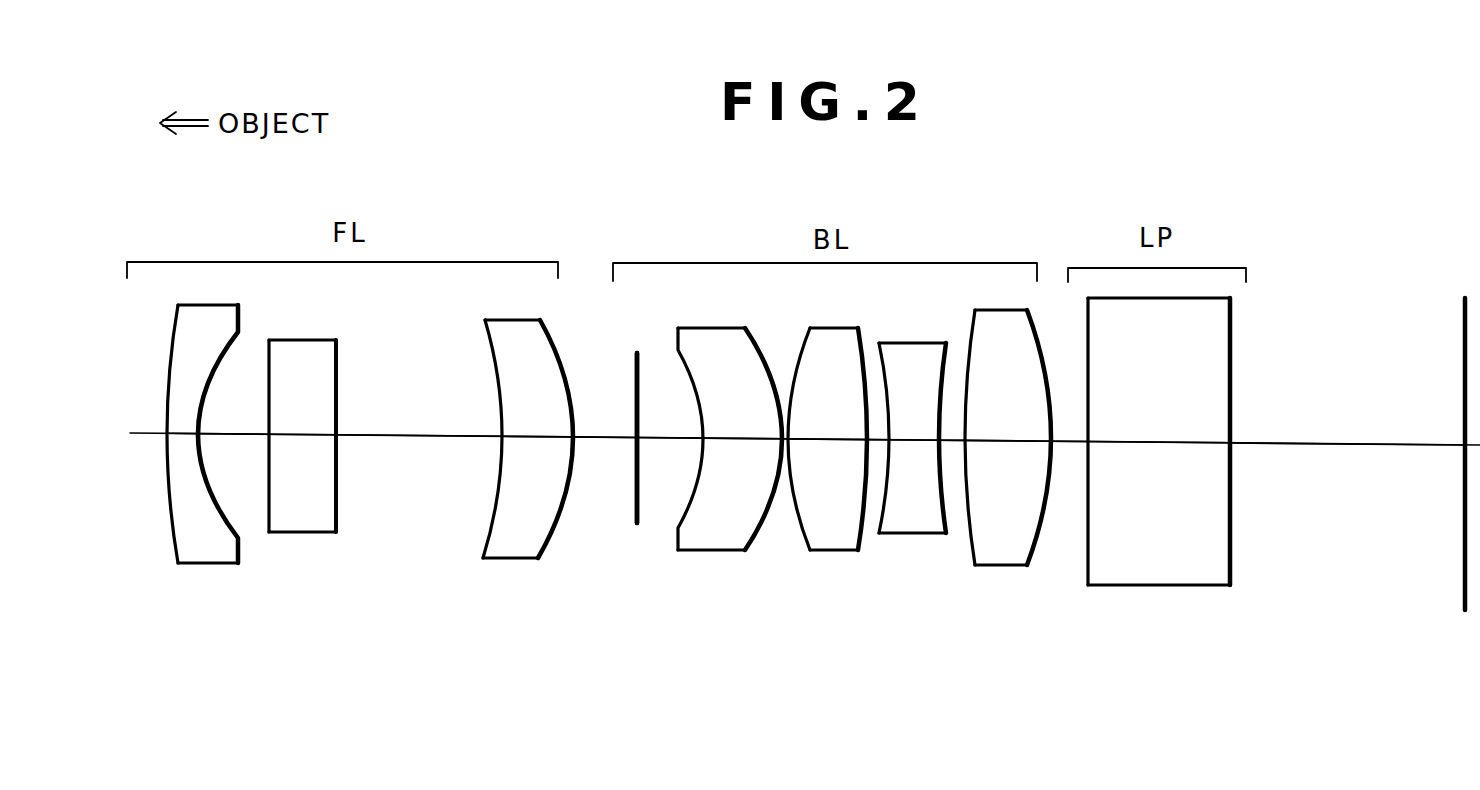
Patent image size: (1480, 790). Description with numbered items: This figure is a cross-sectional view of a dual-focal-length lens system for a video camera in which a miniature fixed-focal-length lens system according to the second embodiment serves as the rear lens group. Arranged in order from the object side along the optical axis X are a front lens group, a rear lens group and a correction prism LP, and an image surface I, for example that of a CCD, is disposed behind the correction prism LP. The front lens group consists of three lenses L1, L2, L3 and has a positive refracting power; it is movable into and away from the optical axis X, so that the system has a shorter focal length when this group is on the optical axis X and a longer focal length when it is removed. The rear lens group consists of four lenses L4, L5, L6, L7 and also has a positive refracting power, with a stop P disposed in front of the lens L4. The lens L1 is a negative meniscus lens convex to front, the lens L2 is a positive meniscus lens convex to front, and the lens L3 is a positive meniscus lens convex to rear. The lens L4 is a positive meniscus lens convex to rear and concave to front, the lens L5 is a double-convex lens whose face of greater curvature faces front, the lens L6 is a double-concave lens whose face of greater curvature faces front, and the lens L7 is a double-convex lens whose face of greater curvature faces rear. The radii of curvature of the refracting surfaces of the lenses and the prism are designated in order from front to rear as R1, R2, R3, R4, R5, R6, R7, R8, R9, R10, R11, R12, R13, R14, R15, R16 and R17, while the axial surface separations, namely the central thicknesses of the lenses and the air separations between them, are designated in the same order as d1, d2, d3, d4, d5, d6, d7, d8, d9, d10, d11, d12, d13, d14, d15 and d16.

The lens L1 is at (196, 476).
The lens L2 is at (311, 492).
The lens L3 is at (497, 482).
The lens L4 is at (707, 475).
The lens L5 is at (830, 507).
The lens L6 is at (920, 512).
The lens L7 is at (1022, 501).
The radius of curvature of refracting surface R1 is at (175, 545).
The radius of curvature of refracting surface R2 is at (225, 512).
The radius of curvature of refracting surface R3 is at (272, 508).
The radius of curvature of refracting surface R4 is at (336, 514).
The radius of curvature of refracting surface R5 is at (488, 529).
The radius of curvature of refracting surface R6 is at (538, 556).
The radius of curvature of refracting surface R7 is at (628, 505).
The radius of curvature of refracting surface R8 is at (683, 510).
The radius of curvature of refracting surface R9 is at (757, 552).
The radius of curvature of refracting surface R10 is at (810, 549).
The radius of curvature of refracting surface R11 is at (858, 551).
The radius of curvature of refracting surface R12 is at (880, 531).
The radius of curvature of refracting surface R13 is at (945, 534).
The radius of curvature of refracting surface R14 is at (968, 553).
The radius of curvature of refracting surface R15 is at (1036, 558).
The radius of curvature of refracting surface R16 is at (1092, 586).
The radius of curvature of refracting surface R17 is at (1232, 562).
The axial surface separation d1 is at (181, 434).
The axial surface separation d2 is at (233, 434).
The axial surface separation d3 is at (296, 435).
The axial surface separation d4 is at (396, 435).
The axial surface separation d5 is at (527, 436).
The axial surface separation d6 is at (597, 437).
The axial surface separation d7 is at (663, 438).
The axial surface separation d8 is at (728, 438).
The axial surface separation d9 is at (788, 438).
The axial surface separation d10 is at (826, 439).
The axial surface separation d11 is at (872, 440).
The axial surface separation d12 is at (912, 440).
The axial surface separation d13 is at (955, 440).
The axial surface separation d14 is at (1004, 441).
The axial surface separation d15 is at (1072, 441).
The axial surface separation d16 is at (1160, 441).
The stop P is at (641, 419).
The correction prism LP is at (1191, 469).
The optical axis X is at (1340, 443).
The image surface I is at (1468, 429).